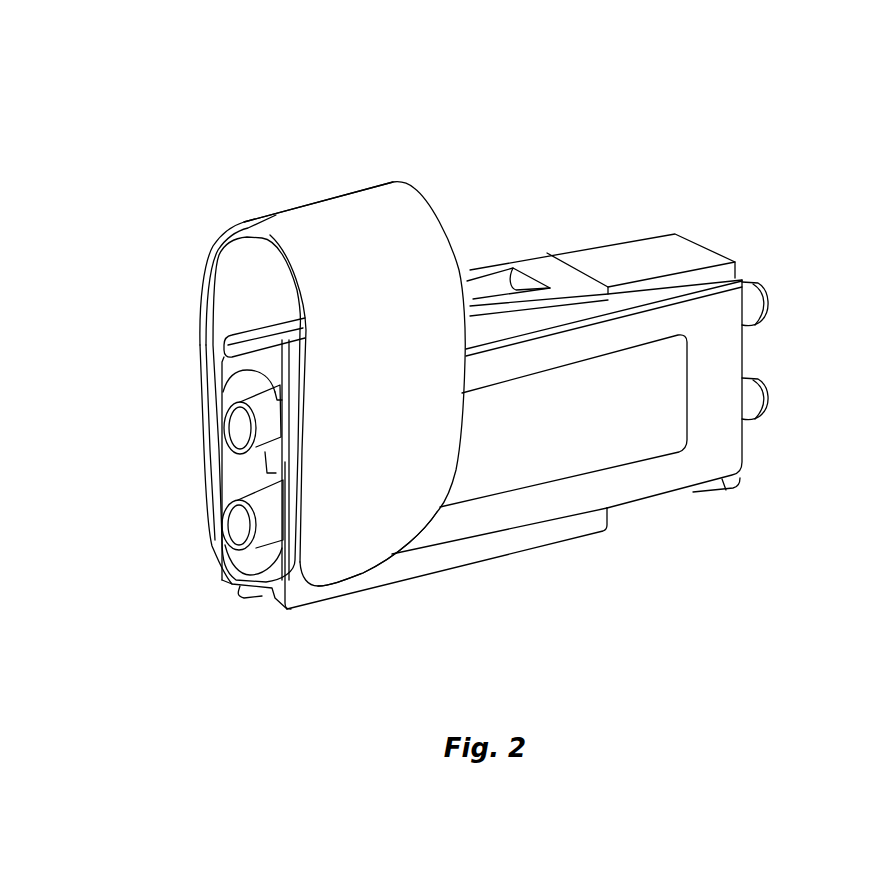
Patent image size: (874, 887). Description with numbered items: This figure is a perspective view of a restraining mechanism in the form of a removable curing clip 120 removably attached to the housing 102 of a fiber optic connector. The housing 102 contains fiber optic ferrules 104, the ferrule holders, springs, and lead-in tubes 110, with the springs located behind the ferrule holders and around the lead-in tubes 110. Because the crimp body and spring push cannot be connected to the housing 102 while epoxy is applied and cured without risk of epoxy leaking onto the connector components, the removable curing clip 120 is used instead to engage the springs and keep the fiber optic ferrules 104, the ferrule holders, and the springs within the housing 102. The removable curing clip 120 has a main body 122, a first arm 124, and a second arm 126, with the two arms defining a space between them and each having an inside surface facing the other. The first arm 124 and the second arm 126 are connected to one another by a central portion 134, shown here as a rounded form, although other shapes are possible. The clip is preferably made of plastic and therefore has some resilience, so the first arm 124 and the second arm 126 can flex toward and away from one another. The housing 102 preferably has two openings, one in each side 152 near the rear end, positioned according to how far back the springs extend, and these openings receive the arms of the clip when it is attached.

The housing 102 is at (734, 441).
The fiber optic ferrules 104 is at (768, 390).
The lead-in tubes 110 is at (262, 527).
The removable curing clip 120 is at (406, 114).
The main body 122 is at (441, 204).
The first arm 124 is at (360, 558).
The second arm 126 is at (212, 462).
The central portion 134 is at (266, 210).
The side 152 is at (623, 477).